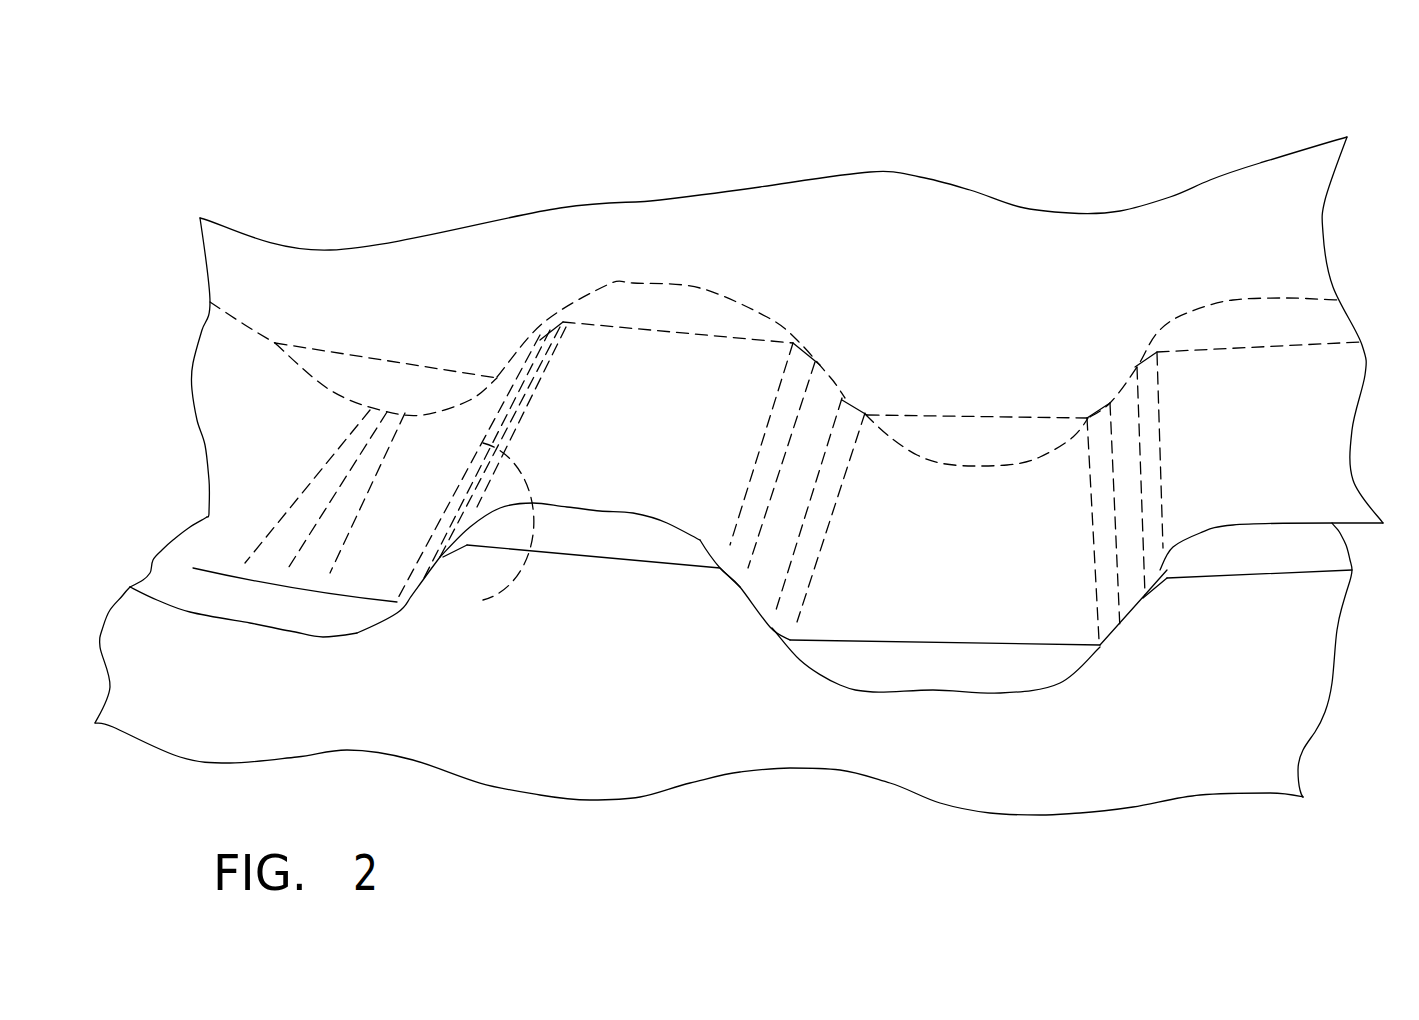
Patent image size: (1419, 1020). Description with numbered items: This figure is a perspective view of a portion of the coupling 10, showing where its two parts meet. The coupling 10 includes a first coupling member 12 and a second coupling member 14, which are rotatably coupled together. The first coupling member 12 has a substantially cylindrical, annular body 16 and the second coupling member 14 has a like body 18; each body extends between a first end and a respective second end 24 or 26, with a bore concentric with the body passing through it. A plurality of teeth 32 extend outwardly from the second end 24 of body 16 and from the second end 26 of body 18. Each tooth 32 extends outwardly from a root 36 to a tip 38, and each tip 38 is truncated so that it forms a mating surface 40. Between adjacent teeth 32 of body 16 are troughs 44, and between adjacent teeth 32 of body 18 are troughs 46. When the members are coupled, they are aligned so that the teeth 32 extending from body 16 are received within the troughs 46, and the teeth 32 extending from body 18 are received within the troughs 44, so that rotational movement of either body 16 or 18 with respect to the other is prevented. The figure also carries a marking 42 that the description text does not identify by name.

The coupling 10 is at (1040, 95).
The first coupling member 12 is at (1285, 188).
The second coupling member 14 is at (1182, 763).
The body 16 is at (1212, 200).
The body 18 is at (1298, 662).
The second end 24 is at (1280, 273).
The second end 26 is at (1305, 597).
The teeth 32 is at (228, 453).
The root 36 is at (957, 495).
The tip 38 is at (1048, 650).
The mating surface 40 is at (425, 577).
The rounded corner 42 is at (1195, 615).
The troughs 44 is at (620, 515).
The troughs 46 is at (182, 575).